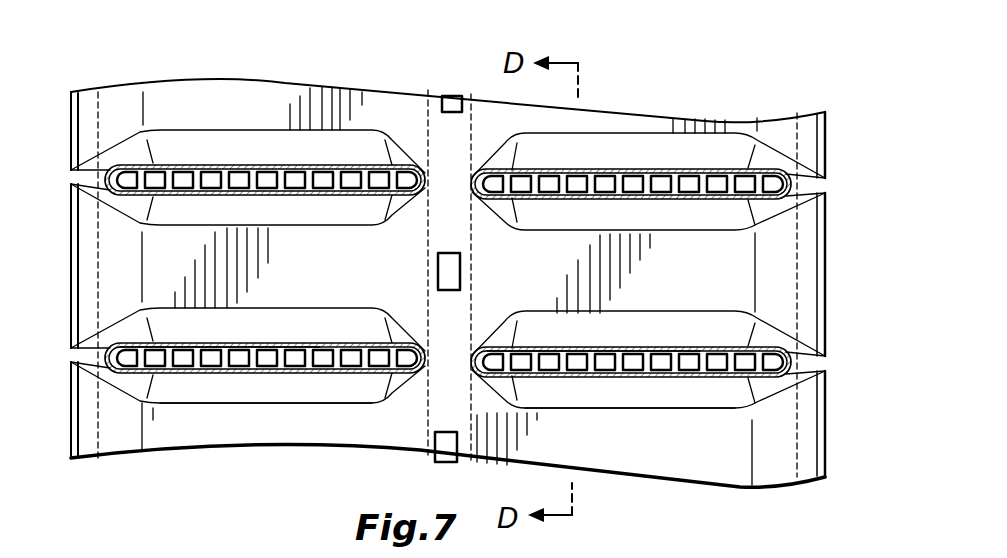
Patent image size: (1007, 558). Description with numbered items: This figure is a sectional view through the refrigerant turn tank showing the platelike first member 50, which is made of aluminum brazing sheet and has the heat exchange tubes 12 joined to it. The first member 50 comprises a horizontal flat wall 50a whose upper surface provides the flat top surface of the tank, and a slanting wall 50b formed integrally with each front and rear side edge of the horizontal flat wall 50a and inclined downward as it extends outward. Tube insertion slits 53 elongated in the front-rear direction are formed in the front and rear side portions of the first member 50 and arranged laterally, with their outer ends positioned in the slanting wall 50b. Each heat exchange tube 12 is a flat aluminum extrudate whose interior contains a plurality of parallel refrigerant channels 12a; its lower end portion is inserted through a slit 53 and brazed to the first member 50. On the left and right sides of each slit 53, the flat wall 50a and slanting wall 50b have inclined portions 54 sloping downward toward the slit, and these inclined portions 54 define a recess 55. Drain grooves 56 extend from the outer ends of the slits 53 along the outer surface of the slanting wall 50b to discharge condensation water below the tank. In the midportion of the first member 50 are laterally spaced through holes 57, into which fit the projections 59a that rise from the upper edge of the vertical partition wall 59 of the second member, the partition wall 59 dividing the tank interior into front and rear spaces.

The first member 50 is at (337, 100).
The horizontal flat wall 50a is at (398, 105).
The slanting wall 50b is at (115, 100).
The heat exchange tube 12 is at (189, 167).
The refrigerant channel 12a is at (268, 173).
The tube insertion slit 53 is at (213, 362).
The inclined portion 54 is at (286, 318).
The recess 55 is at (340, 394).
The drain groove 56 is at (70, 360).
The through hole 57 is at (461, 272).
The partition wall 59 is at (427, 433).
The projection 59a is at (440, 272).